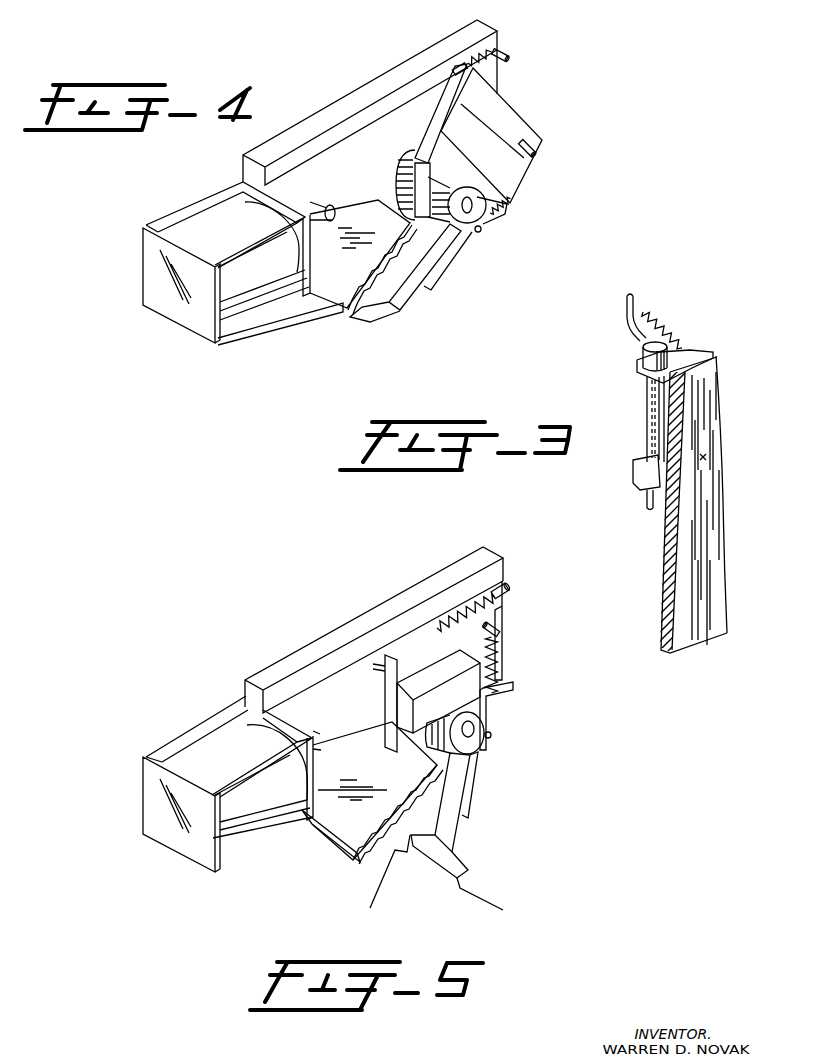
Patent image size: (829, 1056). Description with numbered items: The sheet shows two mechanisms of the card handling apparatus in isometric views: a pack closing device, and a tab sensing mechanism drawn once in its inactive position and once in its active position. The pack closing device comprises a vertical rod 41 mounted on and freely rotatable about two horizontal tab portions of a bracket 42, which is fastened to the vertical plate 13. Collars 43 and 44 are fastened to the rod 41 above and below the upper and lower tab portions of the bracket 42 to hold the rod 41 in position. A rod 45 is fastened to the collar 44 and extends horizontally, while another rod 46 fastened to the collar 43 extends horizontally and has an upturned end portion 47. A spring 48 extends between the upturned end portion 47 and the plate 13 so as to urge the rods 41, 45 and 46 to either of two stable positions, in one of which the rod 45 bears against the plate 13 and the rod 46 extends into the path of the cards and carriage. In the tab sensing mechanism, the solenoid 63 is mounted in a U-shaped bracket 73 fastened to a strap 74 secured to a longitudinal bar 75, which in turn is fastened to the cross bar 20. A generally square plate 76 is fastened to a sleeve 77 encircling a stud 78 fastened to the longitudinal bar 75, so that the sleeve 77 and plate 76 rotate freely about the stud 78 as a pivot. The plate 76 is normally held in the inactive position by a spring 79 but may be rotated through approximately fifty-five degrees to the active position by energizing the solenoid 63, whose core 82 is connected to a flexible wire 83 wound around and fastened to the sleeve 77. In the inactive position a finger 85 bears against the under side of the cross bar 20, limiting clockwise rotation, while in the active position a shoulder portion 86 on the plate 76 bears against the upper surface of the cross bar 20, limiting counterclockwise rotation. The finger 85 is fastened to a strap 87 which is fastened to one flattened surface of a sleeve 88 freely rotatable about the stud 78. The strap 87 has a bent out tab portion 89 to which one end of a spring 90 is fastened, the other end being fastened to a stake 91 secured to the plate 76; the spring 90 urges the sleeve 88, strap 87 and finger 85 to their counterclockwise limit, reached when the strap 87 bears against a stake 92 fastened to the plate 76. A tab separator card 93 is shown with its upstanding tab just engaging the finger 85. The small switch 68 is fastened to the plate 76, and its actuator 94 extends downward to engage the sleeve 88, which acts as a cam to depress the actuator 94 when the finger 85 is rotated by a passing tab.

In FIG. 3, the vertical plate 13 is at (717, 615).
In FIG. 4, the cross bar 20 is at (330, 317).
In FIG. 5, the cross bar 20 is at (343, 848).
In FIG. 3, the vertical rod 41 is at (647, 423).
In FIG. 3, the bracket 42 is at (664, 432).
In FIG. 3, the collar 43 is at (642, 357).
In FIG. 3, the collar 44 is at (647, 492).
In FIG. 3, the rod 45 is at (683, 461).
In FIG. 3, the rod 46 is at (634, 326).
In FIG. 3, the upturned end portion 47 is at (624, 306).
In FIG. 3, the spring 48 is at (672, 325).
In FIG. 4, the solenoid 63 is at (231, 313).
In FIG. 5, the solenoid 63 is at (233, 836).
In FIG. 4, the small switch 68 is at (523, 173).
In FIG. 5, the small switch 68 is at (462, 703).
In FIG. 4, the U-shaped bracket 73 is at (185, 323).
In FIG. 5, the U-shaped bracket 73 is at (185, 845).
In FIG. 4, the strap 74 is at (180, 206).
In FIG. 5, the strap 74 is at (190, 730).
In FIG. 4, the longitudinal bar 75 is at (372, 103).
In FIG. 5, the longitudinal bar 75 is at (385, 626).
In FIG. 4, the generally square plate 76 is at (502, 105).
In FIG. 5, the generally square plate 76 is at (497, 615).
In FIG. 4, the sleeve 77 is at (398, 174).
In FIG. 4, the stud 78 is at (472, 208).
In FIG. 5, the stud 78 is at (472, 727).
In FIG. 4, the spring 79 is at (507, 63).
In FIG. 5, the spring 79 is at (468, 598).
In FIG. 4, the core 82 is at (312, 200).
In FIG. 4, the flexible wire 83 is at (350, 207).
In FIG. 5, the flexible wire 83 is at (348, 730).
In FIG. 4, the finger 85 is at (408, 295).
In FIG. 5, the finger 85 is at (462, 837).
In FIG. 4, the shoulder portion 86 is at (403, 163).
In FIG. 5, the shoulder portion 86 is at (403, 752).
In FIG. 4, the strap 87 is at (430, 275).
In FIG. 5, the strap 87 is at (470, 807).
In FIG. 4, the sleeve 88 is at (465, 225).
In FIG. 5, the sleeve 88 is at (468, 743).
In FIG. 4, the bent out tab portion 89 is at (506, 213).
In FIG. 5, the bent out tab portion 89 is at (505, 690).
In FIG. 4, the spring 90 is at (508, 204).
In FIG. 5, the spring 90 is at (498, 668).
In FIG. 4, the stake 91 is at (541, 150).
In FIG. 5, the stake 91 is at (500, 635).
In FIG. 4, the stake 92 is at (480, 232).
In FIG. 5, the stake 92 is at (491, 735).
In FIG. 5, the tab separator card 93 is at (463, 882).
In FIG. 4, the actuator 94 is at (436, 137).